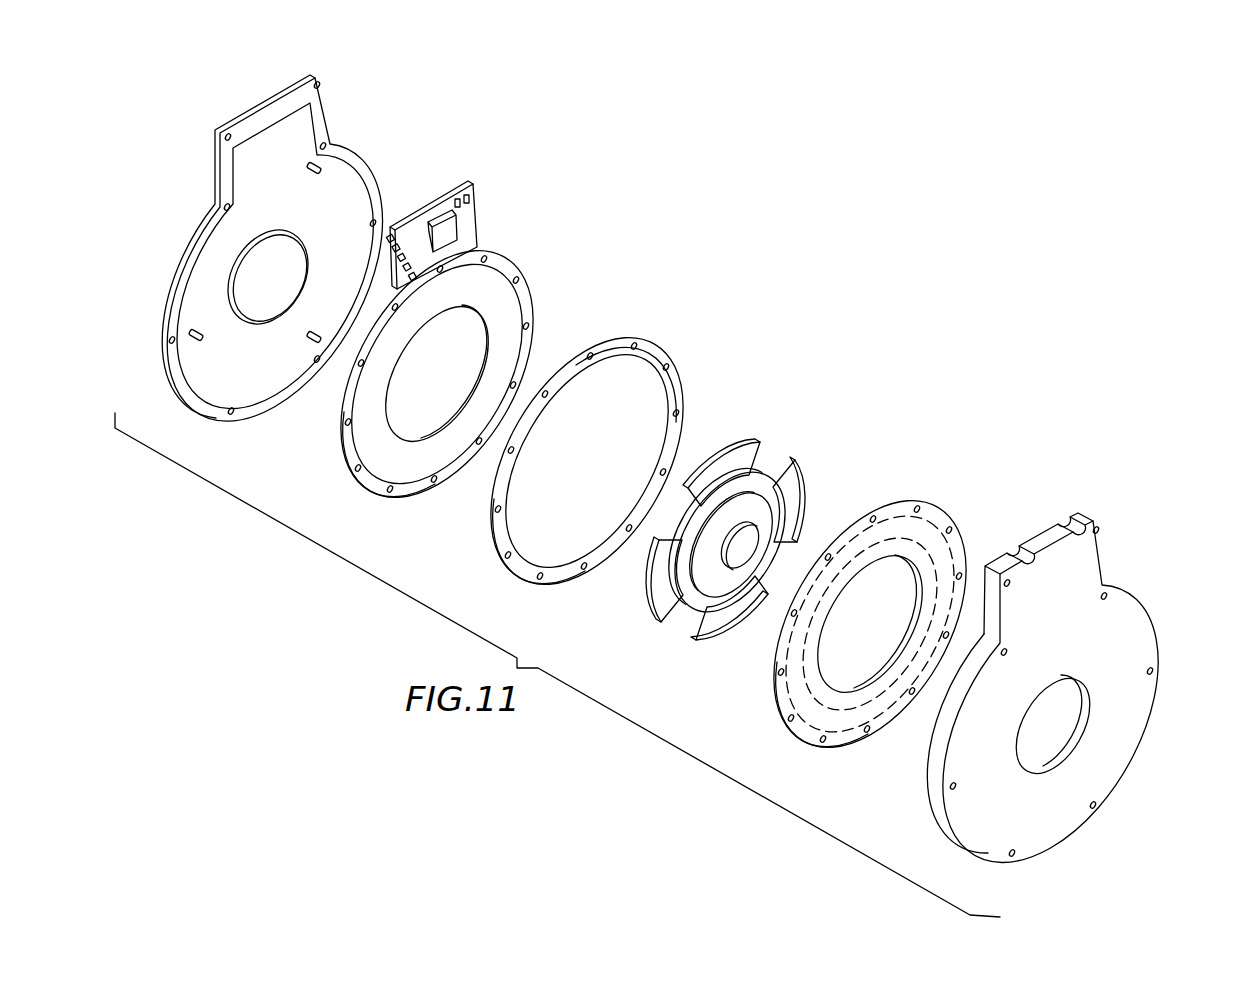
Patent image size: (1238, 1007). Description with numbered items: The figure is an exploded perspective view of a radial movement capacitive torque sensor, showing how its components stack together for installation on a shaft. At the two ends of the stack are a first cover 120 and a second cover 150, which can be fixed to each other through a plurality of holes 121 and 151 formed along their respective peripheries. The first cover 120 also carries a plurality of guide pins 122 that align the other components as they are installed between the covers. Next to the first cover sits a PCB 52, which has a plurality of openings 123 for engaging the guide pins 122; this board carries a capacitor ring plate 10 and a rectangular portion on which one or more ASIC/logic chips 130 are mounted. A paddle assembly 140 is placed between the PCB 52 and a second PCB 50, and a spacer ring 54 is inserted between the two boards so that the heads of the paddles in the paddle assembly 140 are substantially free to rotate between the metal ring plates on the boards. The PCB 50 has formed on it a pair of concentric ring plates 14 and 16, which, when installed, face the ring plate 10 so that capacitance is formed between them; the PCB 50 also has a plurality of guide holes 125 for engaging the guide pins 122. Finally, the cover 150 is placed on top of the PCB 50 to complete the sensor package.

The capacitor ring plate 10 is at (507, 342).
The concentric ring plate 14 is at (827, 608).
The concentric ring plate 16 is at (800, 697).
The PCB 50 is at (840, 738).
The PCB 52 is at (462, 185).
The spacer ring 54 is at (654, 349).
The cover 120 is at (258, 100).
The holes 121 is at (322, 84).
The guide pins 122 is at (203, 340).
The openings 123 is at (346, 425).
The guide holes 125 is at (921, 510).
The ASIC/logic chips 130 is at (443, 225).
The paddle assembly 140 is at (814, 482).
The cover 150 is at (1040, 530).
The holes 151 is at (1099, 530).